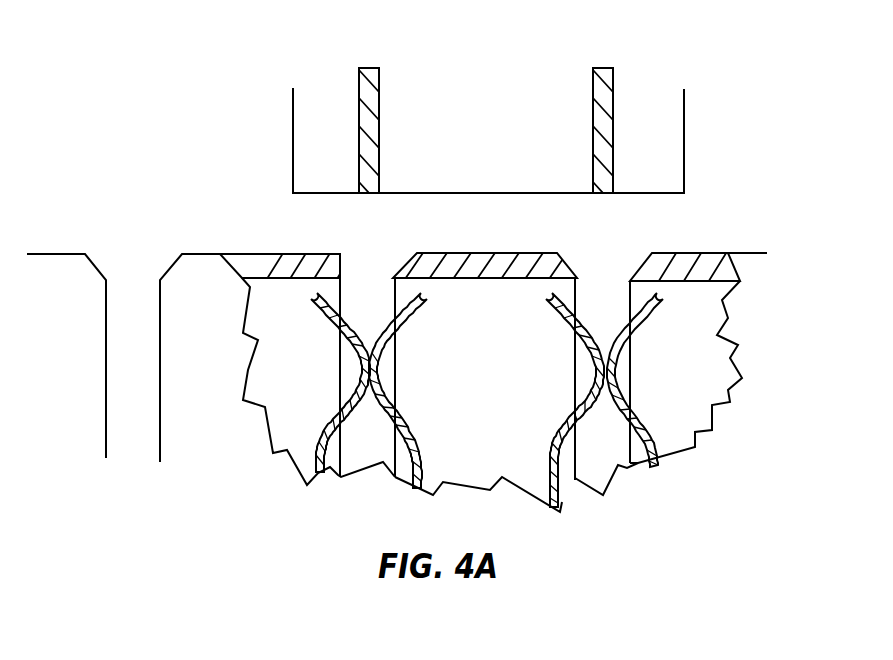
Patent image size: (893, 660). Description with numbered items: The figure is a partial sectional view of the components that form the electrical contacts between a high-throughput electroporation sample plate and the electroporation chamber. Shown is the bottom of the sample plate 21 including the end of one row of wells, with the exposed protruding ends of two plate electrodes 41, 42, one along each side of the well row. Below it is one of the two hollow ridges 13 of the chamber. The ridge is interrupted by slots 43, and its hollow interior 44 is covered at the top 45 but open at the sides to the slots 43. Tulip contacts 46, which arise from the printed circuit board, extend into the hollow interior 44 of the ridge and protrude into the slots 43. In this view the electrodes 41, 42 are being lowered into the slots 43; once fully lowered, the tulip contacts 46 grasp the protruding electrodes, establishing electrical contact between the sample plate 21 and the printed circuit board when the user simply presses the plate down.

The hollow ridge 13 is at (743, 253).
The sample plate 21 is at (684, 158).
The plate electrode 41 is at (359, 160).
The plate electrode 42 is at (613, 122).
The slots 43 is at (603, 287).
The hollow interior 44 is at (700, 342).
The top 45 is at (712, 272).
The tulip contacts 46 is at (597, 376).